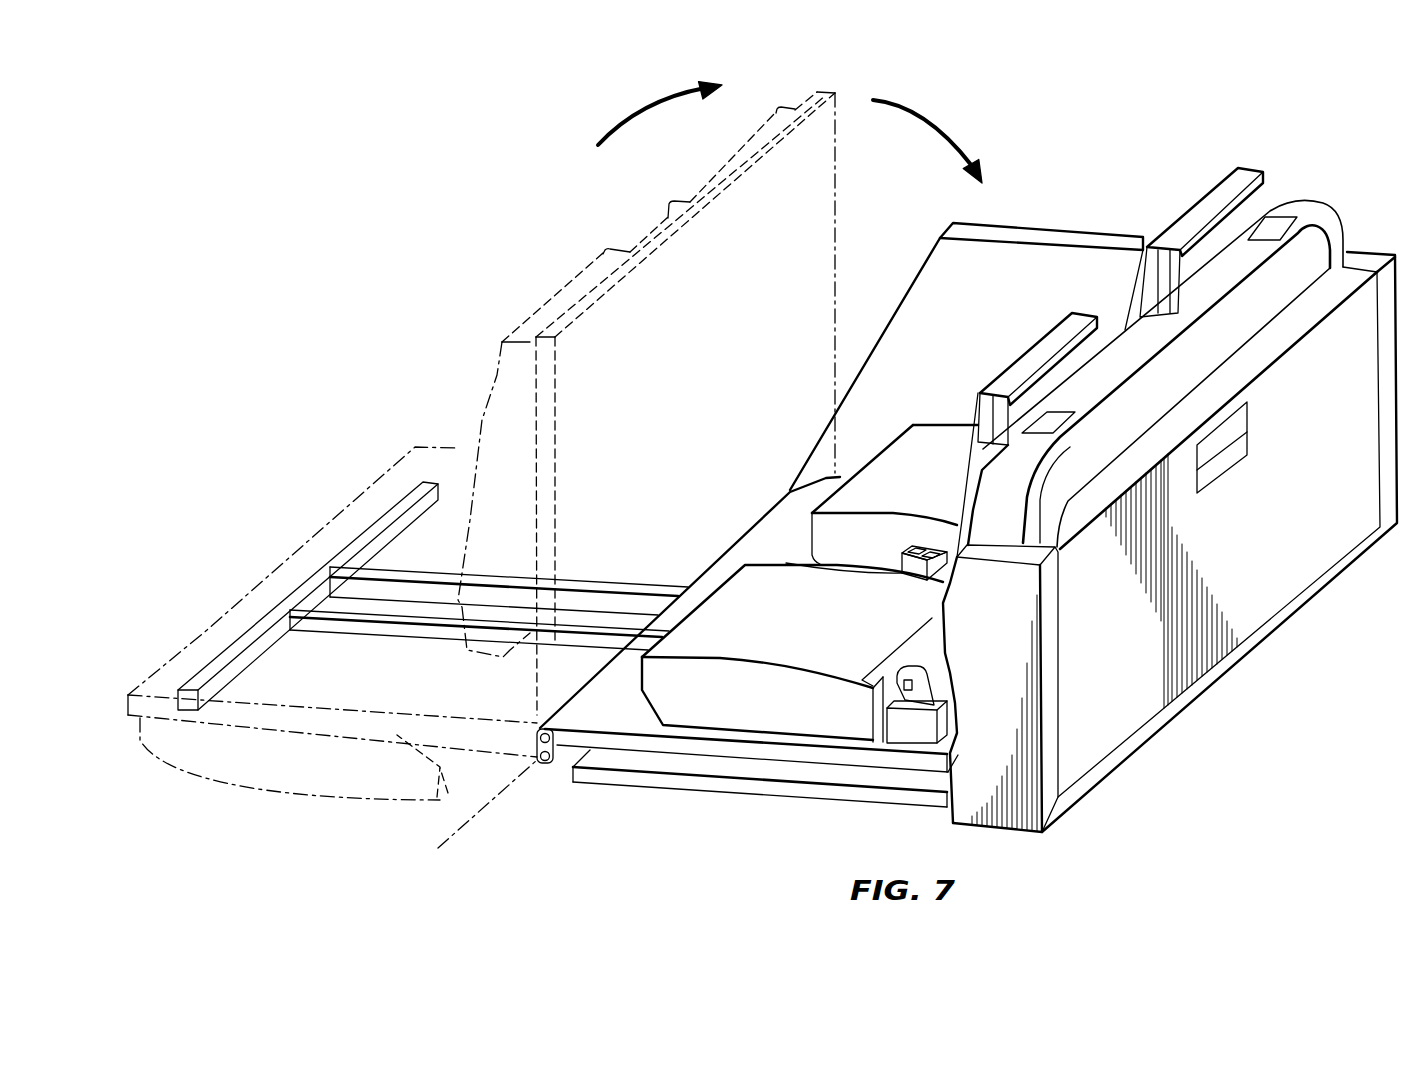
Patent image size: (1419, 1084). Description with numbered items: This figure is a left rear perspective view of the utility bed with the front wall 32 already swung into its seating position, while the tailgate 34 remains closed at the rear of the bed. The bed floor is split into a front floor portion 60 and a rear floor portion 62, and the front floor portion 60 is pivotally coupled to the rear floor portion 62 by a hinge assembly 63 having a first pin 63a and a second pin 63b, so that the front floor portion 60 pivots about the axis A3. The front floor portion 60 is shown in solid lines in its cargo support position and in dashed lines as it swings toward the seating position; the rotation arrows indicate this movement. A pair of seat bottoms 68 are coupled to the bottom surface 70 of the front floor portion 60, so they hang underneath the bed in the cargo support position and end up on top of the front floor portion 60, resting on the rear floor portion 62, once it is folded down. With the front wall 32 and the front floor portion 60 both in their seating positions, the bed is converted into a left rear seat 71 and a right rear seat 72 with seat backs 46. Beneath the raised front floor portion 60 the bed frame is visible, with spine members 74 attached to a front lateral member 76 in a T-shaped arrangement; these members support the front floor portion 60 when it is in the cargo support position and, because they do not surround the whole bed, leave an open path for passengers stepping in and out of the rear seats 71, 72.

The front wall 32 is at (1121, 330).
The tailgate 34 is at (1238, 601).
The seat backs 46 is at (1217, 197).
The front floor portion 60 is at (640, 743).
The rear floor portion 62 is at (752, 785).
The hinge assembly 63 is at (513, 757).
The first pin 63a is at (562, 762).
The second pin 63b is at (532, 737).
The seat bottoms 68 is at (772, 577).
The bottom surface 70 is at (788, 527).
The left rear seat 71 is at (710, 578).
The right rear seat 72 is at (1000, 270).
The spine members 74 is at (420, 577).
The front lateral member 76 is at (258, 630).
The axis A3 is at (460, 840).